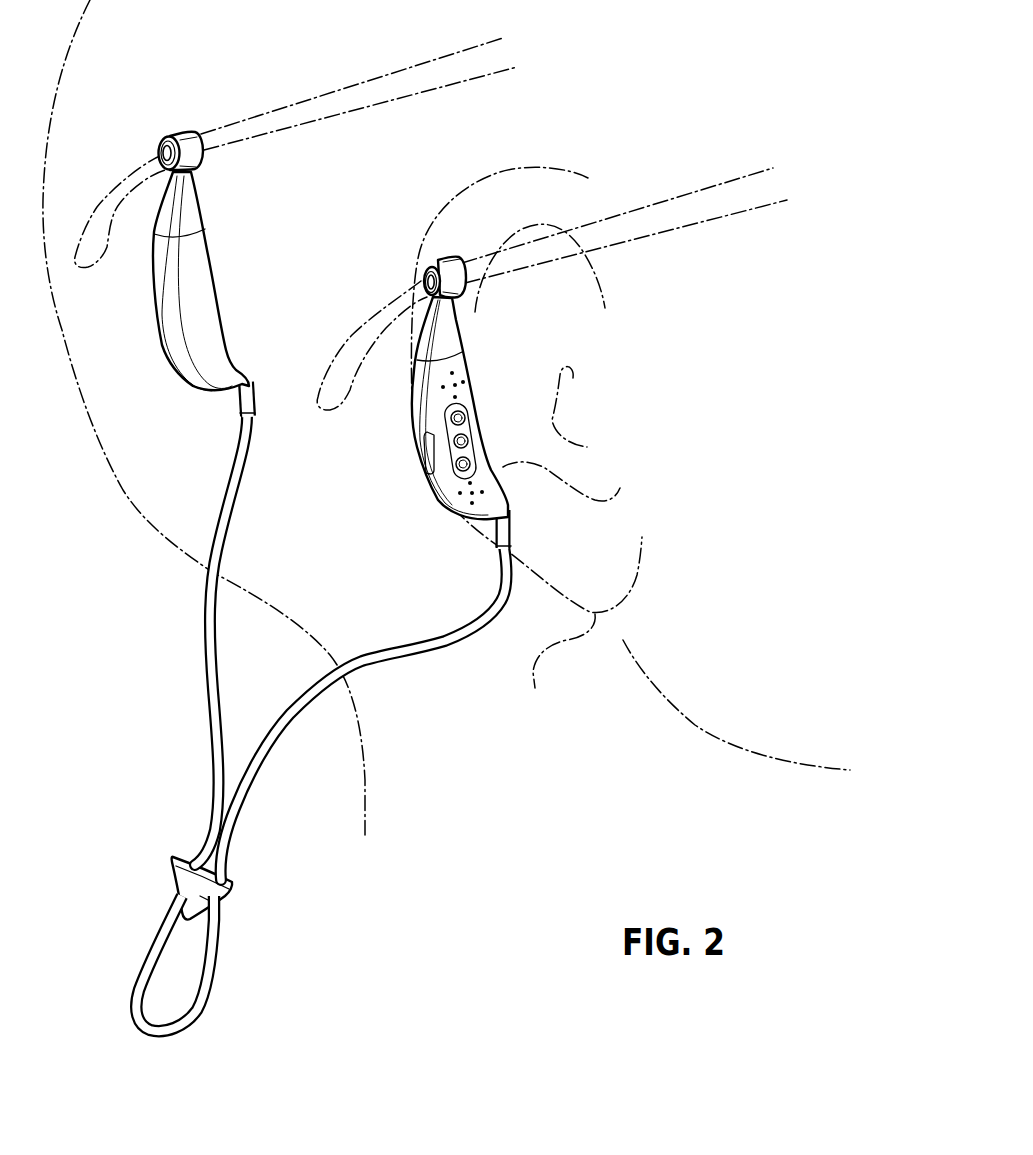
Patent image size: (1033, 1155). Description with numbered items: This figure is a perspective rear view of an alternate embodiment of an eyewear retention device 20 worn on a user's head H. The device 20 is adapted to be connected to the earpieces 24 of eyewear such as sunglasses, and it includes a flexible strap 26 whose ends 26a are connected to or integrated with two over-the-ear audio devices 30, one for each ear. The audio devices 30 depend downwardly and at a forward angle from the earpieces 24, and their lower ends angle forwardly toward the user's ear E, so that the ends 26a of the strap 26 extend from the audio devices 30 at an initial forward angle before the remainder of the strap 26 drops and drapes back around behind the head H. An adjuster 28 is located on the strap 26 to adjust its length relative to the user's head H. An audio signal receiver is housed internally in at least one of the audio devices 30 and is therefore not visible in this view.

The eyewear retention device 20 is at (297, 520).
The earpieces 24 is at (323, 95).
The flexible strap 26 is at (210, 637).
The ends of strap 26a is at (241, 393).
The adjuster 28 is at (188, 888).
The over-the-ear audio devices 30 is at (160, 320).
The user's head H is at (151, 532).
The user's ear E is at (630, 468).